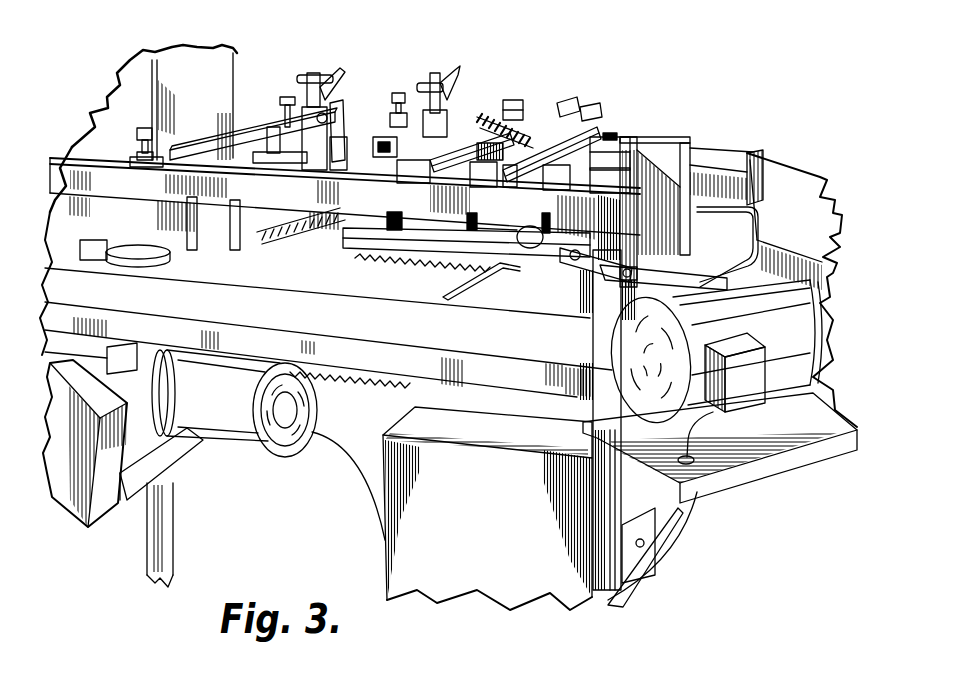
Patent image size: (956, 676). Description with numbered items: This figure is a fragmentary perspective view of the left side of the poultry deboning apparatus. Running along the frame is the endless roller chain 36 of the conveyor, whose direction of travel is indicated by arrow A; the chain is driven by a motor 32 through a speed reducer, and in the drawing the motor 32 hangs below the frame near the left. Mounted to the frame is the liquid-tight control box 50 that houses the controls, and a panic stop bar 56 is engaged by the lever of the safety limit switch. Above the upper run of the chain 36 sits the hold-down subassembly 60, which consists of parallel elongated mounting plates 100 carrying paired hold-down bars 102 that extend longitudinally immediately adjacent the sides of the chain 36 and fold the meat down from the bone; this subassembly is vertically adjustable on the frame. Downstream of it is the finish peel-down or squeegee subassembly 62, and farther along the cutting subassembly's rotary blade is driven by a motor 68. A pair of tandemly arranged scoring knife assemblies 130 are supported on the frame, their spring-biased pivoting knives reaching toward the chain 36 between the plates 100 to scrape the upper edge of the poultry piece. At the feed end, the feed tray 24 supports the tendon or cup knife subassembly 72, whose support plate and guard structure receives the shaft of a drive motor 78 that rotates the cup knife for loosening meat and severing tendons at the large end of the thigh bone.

The feed tray 24 is at (793, 204).
The motor 32 is at (212, 447).
The endless roller chain 36 is at (348, 380).
The liquid-tight control box 50 is at (487, 508).
The panic stop bar 56 is at (698, 207).
The hold-down subassembly 60 is at (525, 226).
The finish peel-down or squeegee subassembly 62 is at (340, 133).
The motor 68 is at (214, 80).
The tendon or cup knife subassembly 72 is at (816, 244).
The drive motor 78 is at (744, 321).
The support or mounting plates 100 is at (393, 238).
The hold-down bar or guide rod 102 is at (415, 263).
The scraper blade or scoring knife assembly 130 is at (455, 118).
The arrow A is at (215, 268).